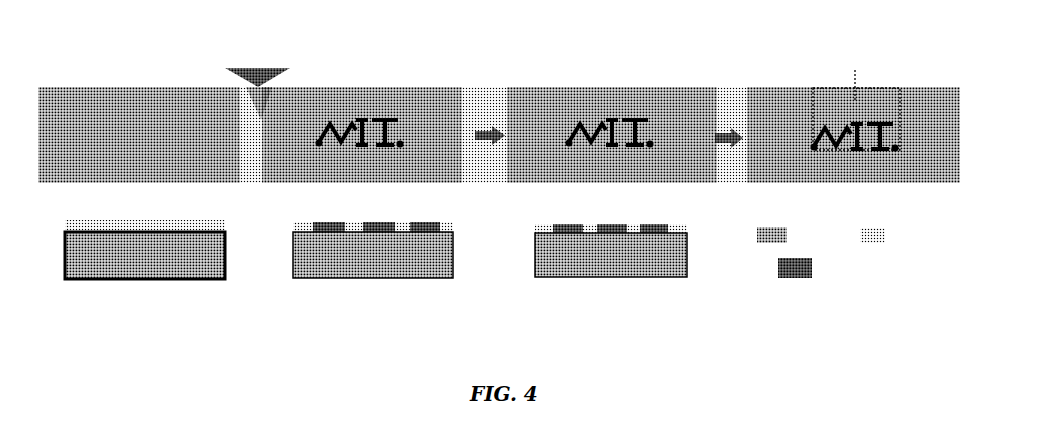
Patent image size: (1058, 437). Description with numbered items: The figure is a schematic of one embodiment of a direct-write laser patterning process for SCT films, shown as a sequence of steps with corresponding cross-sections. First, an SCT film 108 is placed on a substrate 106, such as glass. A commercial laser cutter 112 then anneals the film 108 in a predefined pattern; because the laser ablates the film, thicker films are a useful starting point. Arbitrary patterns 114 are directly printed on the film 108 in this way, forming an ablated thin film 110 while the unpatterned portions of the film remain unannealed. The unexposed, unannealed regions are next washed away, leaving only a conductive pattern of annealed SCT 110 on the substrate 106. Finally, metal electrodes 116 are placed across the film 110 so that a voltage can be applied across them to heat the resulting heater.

The substrate 106 is at (46, 108).
The SCT film 108 is at (120, 110).
The ablated thin film 110 is at (330, 227).
The laser cutter 112 is at (263, 92).
The arbitrary patterns 114 is at (385, 122).
The metal electrodes 116 is at (905, 90).